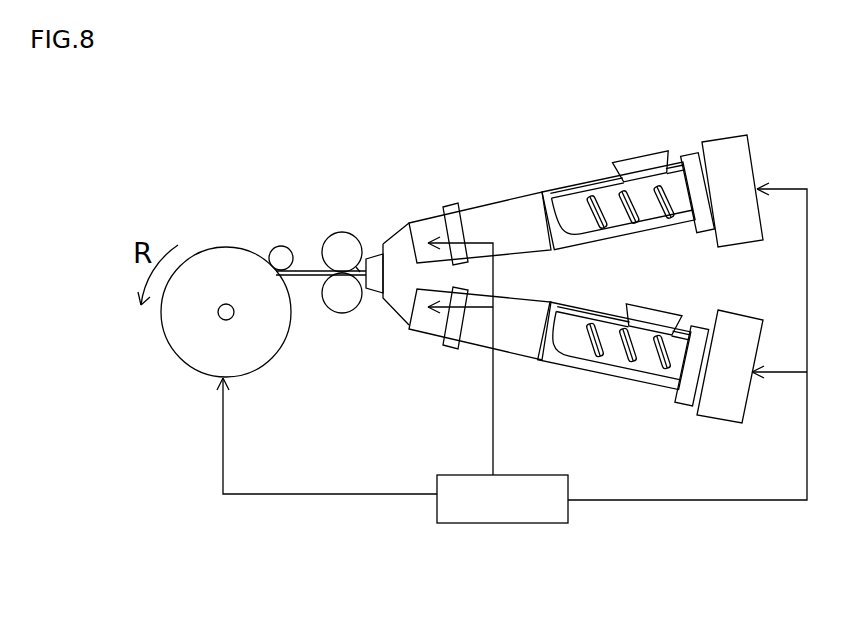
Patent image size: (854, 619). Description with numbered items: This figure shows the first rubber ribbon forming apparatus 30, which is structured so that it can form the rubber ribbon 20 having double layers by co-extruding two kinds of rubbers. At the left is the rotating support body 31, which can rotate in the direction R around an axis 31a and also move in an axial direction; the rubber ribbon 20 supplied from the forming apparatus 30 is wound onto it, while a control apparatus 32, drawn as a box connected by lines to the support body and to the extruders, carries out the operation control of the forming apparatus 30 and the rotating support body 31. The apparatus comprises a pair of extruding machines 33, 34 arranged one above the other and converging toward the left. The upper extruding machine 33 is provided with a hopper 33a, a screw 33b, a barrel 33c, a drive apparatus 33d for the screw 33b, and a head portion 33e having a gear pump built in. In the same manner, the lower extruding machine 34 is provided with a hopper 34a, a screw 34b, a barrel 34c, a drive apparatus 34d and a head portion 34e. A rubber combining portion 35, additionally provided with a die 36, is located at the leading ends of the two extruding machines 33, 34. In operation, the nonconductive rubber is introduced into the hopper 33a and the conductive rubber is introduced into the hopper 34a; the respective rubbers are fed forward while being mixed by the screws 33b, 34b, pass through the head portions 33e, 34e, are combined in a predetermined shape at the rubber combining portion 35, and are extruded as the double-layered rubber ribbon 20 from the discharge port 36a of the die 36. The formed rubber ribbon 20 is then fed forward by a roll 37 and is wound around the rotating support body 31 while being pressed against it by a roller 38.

The first rubber ribbon 20 is at (310, 270).
The first rubber ribbon forming apparatus 30 is at (657, 417).
The rotating support body 31 is at (216, 248).
The axis 31a is at (218, 315).
The control apparatus 32 is at (488, 524).
The extruding machine 33 is at (502, 201).
The hopper 33a is at (653, 161).
The screw 33b is at (609, 207).
The barrel 33c is at (562, 190).
The drive apparatus 33d is at (731, 144).
The head portion 33e is at (443, 210).
The extruding machine 34 is at (523, 357).
The hopper 34a is at (654, 313).
The screw 34b is at (617, 355).
The barrel 34c is at (597, 310).
The drive apparatus 34d is at (746, 322).
The head portion 34e is at (440, 343).
The rubber combining portion 35 is at (397, 247).
The die 36 is at (357, 237).
The discharge port 36a is at (358, 286).
The roll 37 is at (342, 314).
The roller 38 is at (272, 248).